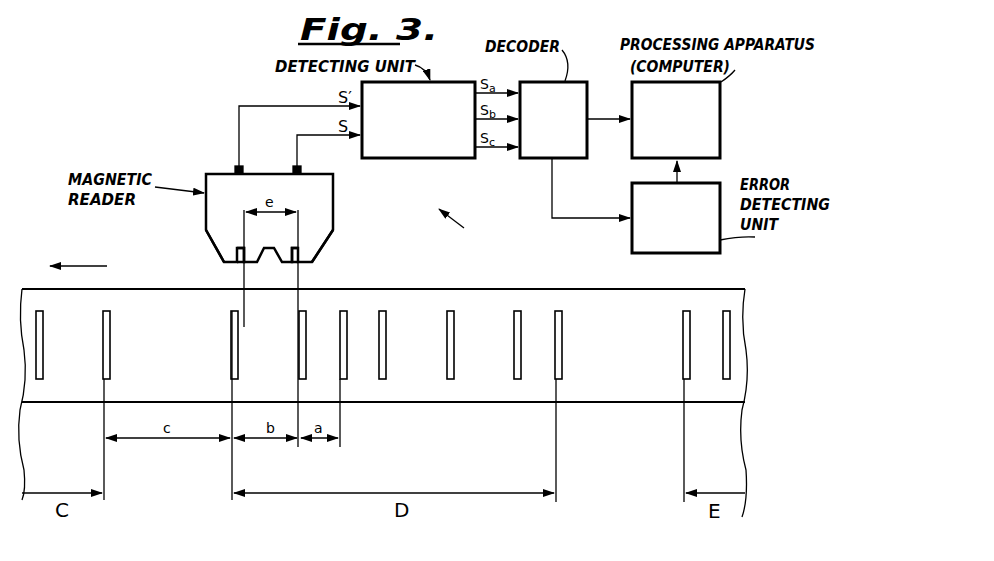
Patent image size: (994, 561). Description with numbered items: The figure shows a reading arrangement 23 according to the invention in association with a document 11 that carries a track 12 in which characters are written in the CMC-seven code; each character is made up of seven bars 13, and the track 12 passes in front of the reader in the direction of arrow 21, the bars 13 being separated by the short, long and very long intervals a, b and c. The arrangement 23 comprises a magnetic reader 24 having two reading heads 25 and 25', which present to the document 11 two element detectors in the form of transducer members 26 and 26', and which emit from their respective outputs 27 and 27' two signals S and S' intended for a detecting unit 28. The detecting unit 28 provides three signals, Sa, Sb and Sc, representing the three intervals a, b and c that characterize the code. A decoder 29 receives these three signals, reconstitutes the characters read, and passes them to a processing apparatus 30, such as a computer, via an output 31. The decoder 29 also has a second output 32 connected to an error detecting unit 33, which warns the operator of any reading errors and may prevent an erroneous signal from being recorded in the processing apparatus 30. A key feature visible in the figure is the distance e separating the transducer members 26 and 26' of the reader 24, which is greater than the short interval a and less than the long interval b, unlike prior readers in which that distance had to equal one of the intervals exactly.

The document 11 is at (750, 300).
The track 12 is at (632, 403).
The bars 13 is at (454, 340).
The arrow 21 is at (91, 267).
The reading arrangement 23 is at (463, 226).
The magnetic reader 24 is at (337, 211).
The reading head 25 is at (340, 246).
The reading head 25' is at (201, 253).
The transducer member 26 is at (322, 264).
The transducer member 26' is at (211, 281).
The output 27 is at (326, 154).
The output 27' is at (276, 140).
The detecting unit 28 is at (432, 137).
The decoder 29 is at (567, 137).
The processing apparatus 30 is at (688, 137).
The output 31 is at (592, 118).
The second output 32 is at (552, 160).
The error detecting unit 33 is at (688, 234).